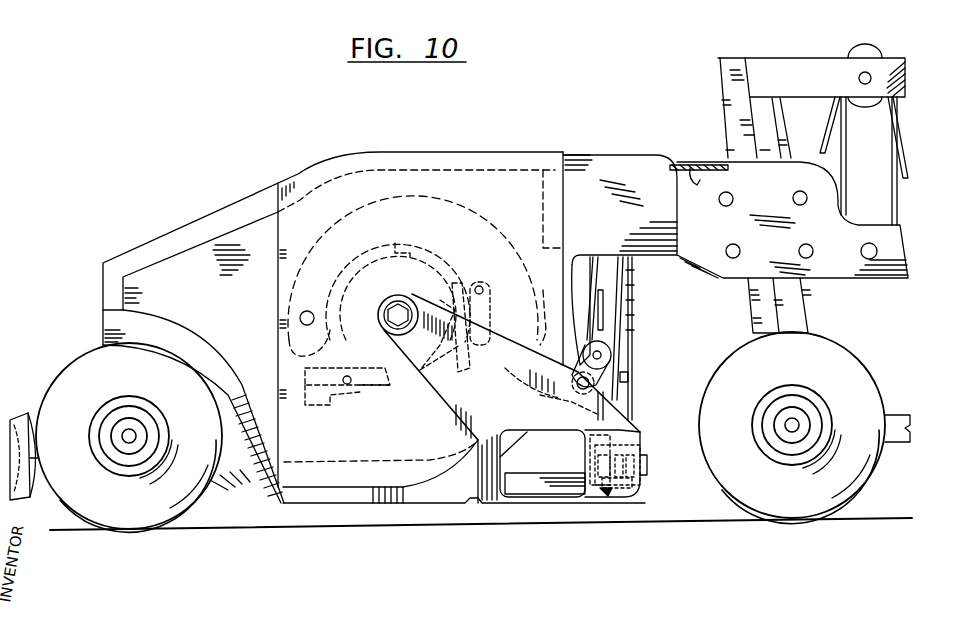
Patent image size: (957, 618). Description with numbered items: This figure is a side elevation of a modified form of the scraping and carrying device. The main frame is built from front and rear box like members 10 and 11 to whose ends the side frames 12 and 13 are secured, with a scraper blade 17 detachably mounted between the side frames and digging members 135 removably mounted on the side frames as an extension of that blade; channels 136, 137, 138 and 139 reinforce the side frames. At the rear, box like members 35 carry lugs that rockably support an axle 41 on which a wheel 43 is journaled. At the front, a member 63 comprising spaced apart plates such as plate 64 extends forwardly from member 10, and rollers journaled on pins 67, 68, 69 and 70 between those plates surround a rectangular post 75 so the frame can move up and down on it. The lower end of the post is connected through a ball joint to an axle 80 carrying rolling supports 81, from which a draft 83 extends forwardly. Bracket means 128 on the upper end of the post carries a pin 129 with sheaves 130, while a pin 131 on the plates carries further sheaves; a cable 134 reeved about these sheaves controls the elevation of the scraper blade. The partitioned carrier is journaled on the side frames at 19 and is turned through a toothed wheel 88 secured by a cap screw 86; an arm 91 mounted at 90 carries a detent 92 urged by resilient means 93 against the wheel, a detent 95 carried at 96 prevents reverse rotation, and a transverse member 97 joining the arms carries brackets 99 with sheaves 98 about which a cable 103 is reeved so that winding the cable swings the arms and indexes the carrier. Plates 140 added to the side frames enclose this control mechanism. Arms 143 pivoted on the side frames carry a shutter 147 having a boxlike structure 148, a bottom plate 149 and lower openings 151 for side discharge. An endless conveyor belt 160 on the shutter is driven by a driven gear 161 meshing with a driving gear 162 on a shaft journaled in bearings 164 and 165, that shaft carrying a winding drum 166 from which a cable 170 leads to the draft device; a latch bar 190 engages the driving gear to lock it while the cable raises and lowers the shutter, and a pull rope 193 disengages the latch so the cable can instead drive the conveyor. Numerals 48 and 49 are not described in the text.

The front box like member 10 is at (613, 165).
The rear box like member 11 is at (202, 216).
The side frame 12 is at (345, 490).
The side frame 13 is at (316, 490).
The scraper blade 17 is at (478, 490).
The carrier journal 19 is at (392, 316).
The box like member 35 is at (243, 456).
The axle 41 is at (125, 435).
The wheel 43 is at (142, 387).
The bumper bracket 48 is at (40, 478).
The bumper 49 is at (20, 418).
The member 63 is at (714, 215).
The plate 64 is at (677, 160).
The pin 67 is at (719, 199).
The pin 68 is at (793, 198).
The pin 69 is at (740, 251).
The pin 70 is at (813, 251).
The post 75 is at (722, 66).
The axle 80 is at (786, 426).
The rolling support 81 is at (798, 372).
The draft 83 is at (905, 415).
The cap screw 86 is at (392, 326).
The toothed wheel 88 is at (393, 280).
The arm mounting 90 is at (307, 311).
The arm 91 is at (445, 207).
The detent 92 is at (470, 362).
The resilient means 93 is at (498, 306).
The detent 95 is at (390, 385).
The detent mounting 96 is at (348, 386).
The member 97 is at (600, 388).
The sheave 98 is at (610, 338).
The bracket 99 is at (605, 365).
The cable 103 is at (700, 182).
The bracket means 128 is at (898, 60).
The pin 129 is at (865, 85).
The sheave 130 is at (866, 54).
The pin 131 is at (869, 243).
The cable 134 is at (848, 150).
The digging member 135 is at (425, 490).
The channel 136 is at (545, 184).
The channel 137 is at (233, 213).
The channel 138 is at (205, 345).
The channel 139 is at (393, 470).
The plate 140 is at (318, 210).
The shutter arm 143 is at (392, 297).
The shutter 147 is at (637, 430).
The boxlike structure 148 is at (641, 447).
The bottom plate 149 is at (576, 498).
The opening 151 is at (543, 446).
The endless conveyor belt 160 is at (520, 482).
The driven gear 161 is at (622, 490).
The driving gear 162 is at (592, 456).
The bearing 164 is at (592, 466).
The bearing 165 is at (649, 462).
The winding drum 166 is at (645, 477).
The cable 170 is at (702, 165).
The latch bar 190 is at (597, 414).
The pull rope 193 is at (605, 310).